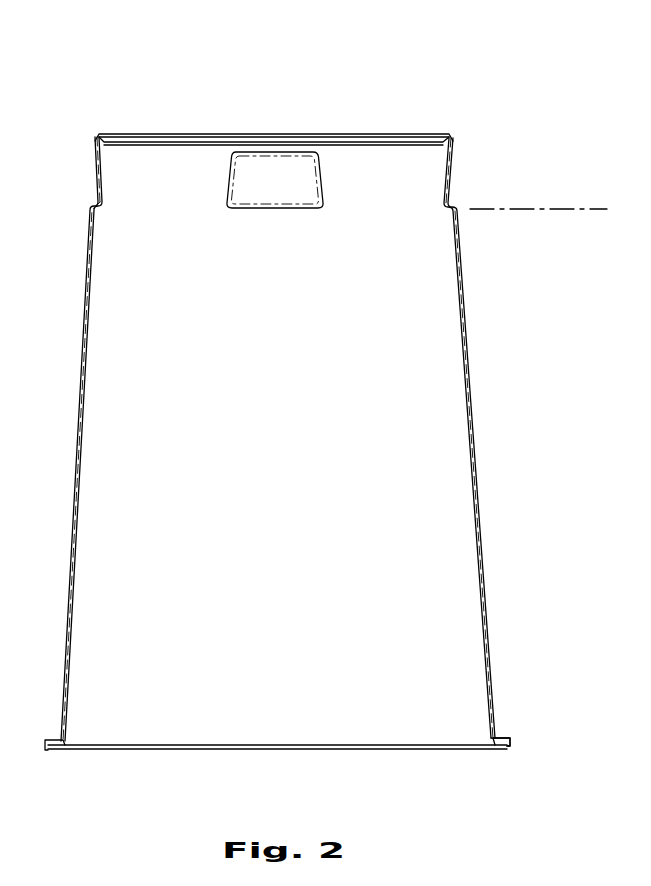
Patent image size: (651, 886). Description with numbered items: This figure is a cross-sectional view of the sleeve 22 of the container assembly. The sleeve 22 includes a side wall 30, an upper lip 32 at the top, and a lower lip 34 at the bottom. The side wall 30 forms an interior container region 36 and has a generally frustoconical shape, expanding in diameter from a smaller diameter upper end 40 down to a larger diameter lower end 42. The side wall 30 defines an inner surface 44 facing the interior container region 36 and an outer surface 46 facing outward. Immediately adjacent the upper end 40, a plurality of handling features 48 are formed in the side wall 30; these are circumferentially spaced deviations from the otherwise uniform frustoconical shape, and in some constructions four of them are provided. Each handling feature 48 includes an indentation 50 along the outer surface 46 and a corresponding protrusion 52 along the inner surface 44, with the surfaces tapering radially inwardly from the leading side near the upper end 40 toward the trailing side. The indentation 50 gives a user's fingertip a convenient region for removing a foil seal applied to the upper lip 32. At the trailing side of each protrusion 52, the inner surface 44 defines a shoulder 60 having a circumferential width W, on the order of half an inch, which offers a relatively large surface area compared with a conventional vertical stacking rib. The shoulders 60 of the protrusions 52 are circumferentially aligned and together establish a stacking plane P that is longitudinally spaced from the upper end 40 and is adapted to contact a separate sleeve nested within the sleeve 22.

The sleeve 22 is at (403, 35).
The side wall 30 is at (310, 436).
The upper lip 32 is at (300, 111).
The lower lip 34 is at (508, 722).
The interior container region 36 is at (444, 727).
The upper end 40 is at (454, 138).
The lower end 42 is at (492, 742).
The inner surface 44 is at (77, 439).
The outer surface 46 is at (73, 496).
The handling feature 48 is at (280, 160).
The indentation 50 is at (97, 201).
The protrusion 52 is at (102, 183).
The shoulder 60 is at (96, 213).
The circumferential width W is at (228, 217).
The stacking plane P is at (565, 209).